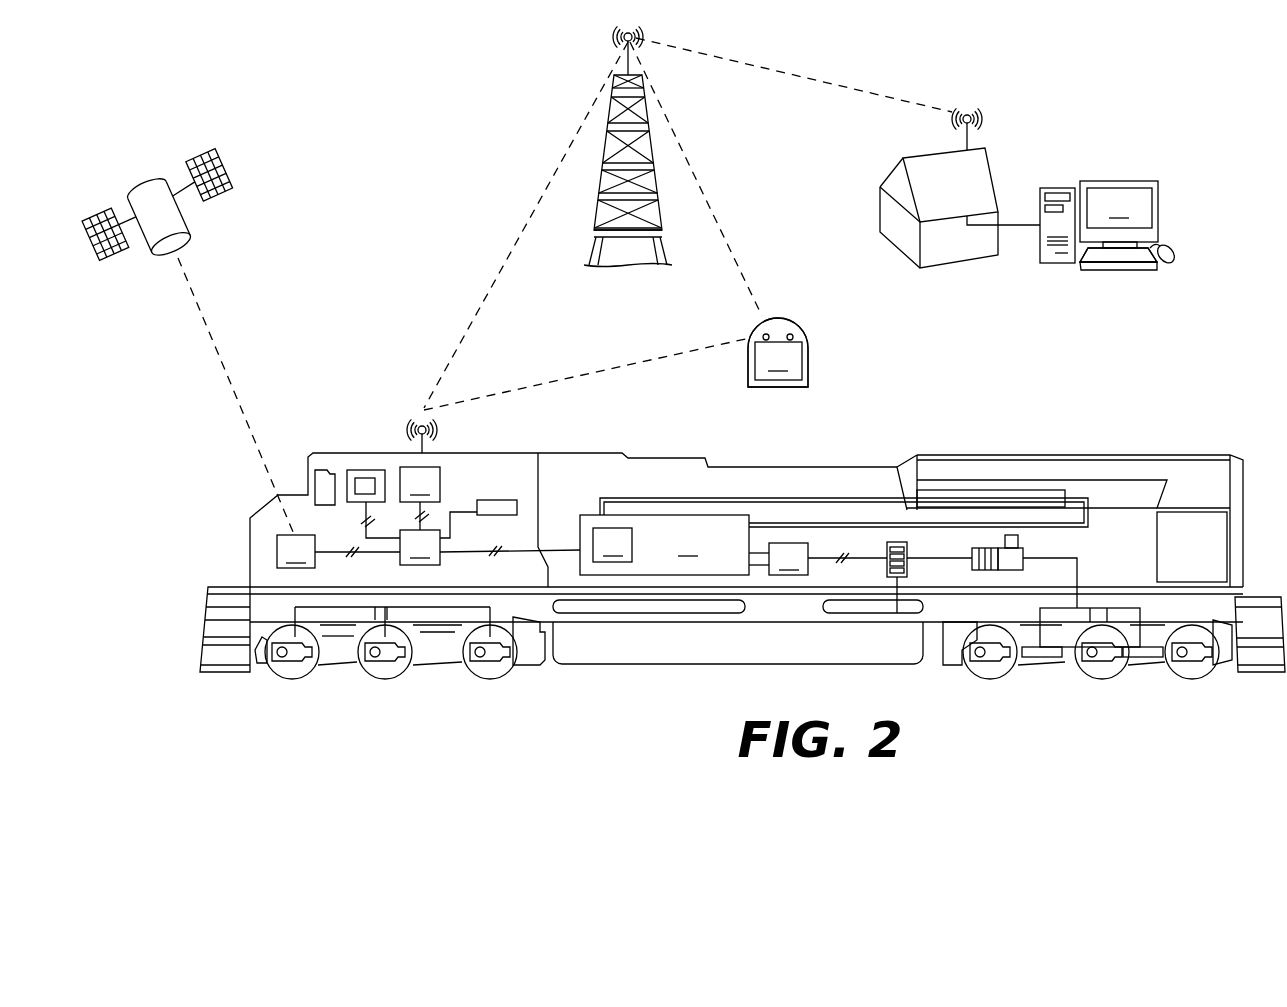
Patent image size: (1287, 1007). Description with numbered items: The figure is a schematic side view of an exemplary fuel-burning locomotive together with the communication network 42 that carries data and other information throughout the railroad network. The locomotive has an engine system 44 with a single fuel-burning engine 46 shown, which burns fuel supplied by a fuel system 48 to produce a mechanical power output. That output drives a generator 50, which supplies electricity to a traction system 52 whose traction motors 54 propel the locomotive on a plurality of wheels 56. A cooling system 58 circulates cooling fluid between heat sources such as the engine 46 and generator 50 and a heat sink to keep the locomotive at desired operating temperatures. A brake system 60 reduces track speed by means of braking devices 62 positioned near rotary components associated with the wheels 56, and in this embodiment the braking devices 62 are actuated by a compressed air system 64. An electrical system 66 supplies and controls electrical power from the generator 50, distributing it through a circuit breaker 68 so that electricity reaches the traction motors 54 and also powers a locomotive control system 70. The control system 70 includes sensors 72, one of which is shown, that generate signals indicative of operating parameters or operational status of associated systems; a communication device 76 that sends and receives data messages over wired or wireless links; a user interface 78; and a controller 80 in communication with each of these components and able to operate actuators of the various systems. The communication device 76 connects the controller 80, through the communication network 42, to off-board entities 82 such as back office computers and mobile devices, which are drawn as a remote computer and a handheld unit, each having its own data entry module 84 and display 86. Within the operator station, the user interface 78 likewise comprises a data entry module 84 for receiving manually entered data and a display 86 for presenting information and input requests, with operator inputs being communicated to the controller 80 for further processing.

The communication network 42 is at (425, 190).
The engine system 44 is at (583, 508).
The engine 46 is at (664, 545).
The fuel system 48 is at (612, 545).
The generator 50 is at (778, 559).
The traction system 52 is at (394, 710).
The traction motors 54 is at (290, 677).
The wheels 56 is at (990, 677).
The cooling system 58 is at (975, 490).
The brake system 60 is at (1082, 728).
The braking devices 62 is at (1040, 660).
The compressed air system 64 is at (1092, 567).
The electrical system 66 is at (830, 578).
The circuit breaker 68 is at (909, 565).
The locomotive control system 70 is at (428, 449).
The sensors 72 is at (493, 500).
The communication device 76 is at (420, 460).
The user interface 78 is at (315, 390).
The controller 80 is at (420, 547).
The off-board entities 82 is at (1172, 188).
The data entry module 84 is at (1097, 272).
The display 86 is at (353, 477).